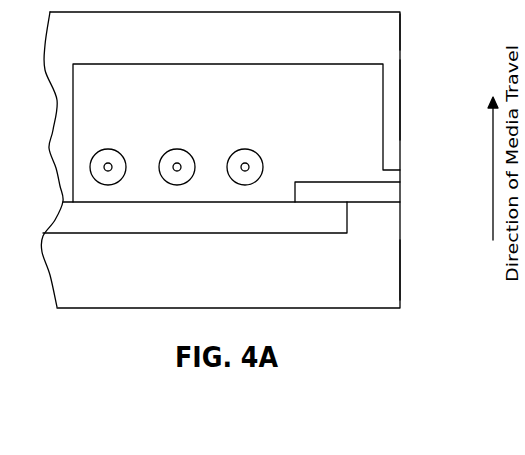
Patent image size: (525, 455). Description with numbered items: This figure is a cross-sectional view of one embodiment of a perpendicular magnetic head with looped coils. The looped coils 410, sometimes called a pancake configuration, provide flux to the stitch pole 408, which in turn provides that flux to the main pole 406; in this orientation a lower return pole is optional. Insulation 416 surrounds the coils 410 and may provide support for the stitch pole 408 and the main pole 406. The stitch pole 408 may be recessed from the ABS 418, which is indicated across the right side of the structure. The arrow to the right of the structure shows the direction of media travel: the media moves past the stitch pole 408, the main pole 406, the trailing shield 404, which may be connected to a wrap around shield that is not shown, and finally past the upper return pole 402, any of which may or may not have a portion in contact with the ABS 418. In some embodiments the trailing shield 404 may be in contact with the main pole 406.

The upper return pole 402 is at (309, 46).
The trailing shield 404 is at (400, 100).
The main pole 406 is at (400, 187).
The stitch pole 408 is at (255, 226).
The looped coils 410 is at (103, 150).
The insulation 416 is at (348, 140).
The ABS 418 is at (399, 30).